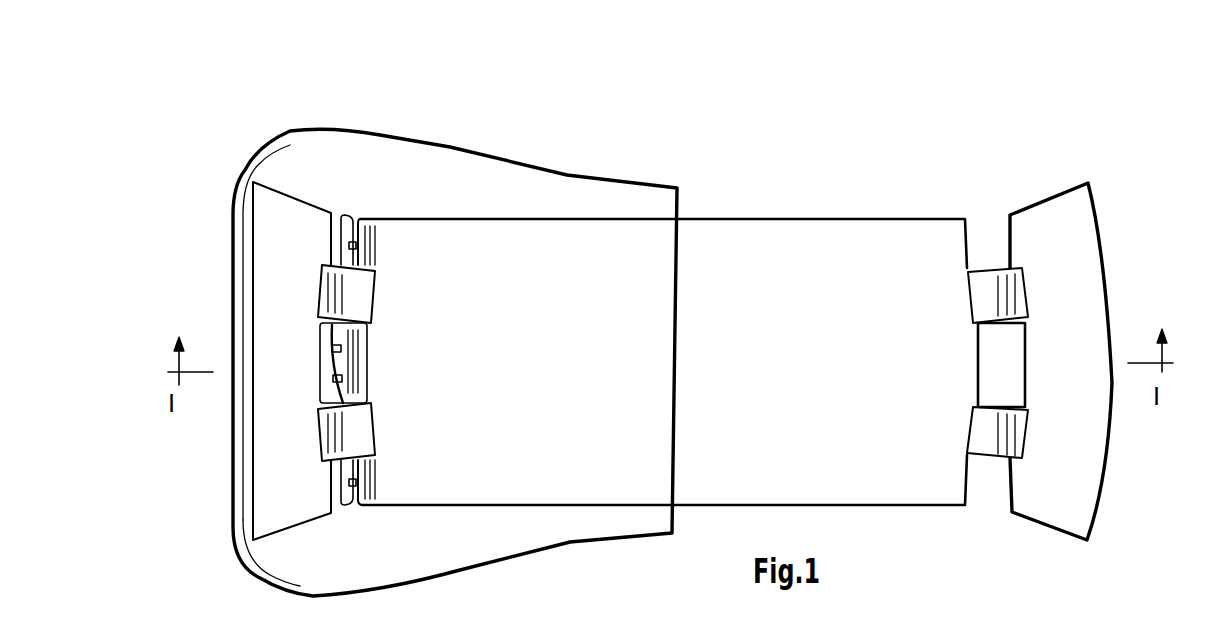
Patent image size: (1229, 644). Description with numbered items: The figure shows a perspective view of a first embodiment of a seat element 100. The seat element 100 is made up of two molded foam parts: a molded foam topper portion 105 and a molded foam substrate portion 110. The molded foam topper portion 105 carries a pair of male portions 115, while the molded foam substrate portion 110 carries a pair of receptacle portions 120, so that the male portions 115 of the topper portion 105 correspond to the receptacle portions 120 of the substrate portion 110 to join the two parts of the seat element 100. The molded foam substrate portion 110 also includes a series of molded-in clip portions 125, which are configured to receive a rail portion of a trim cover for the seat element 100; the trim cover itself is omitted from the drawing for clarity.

The seat element 100 is at (815, 118).
The molded foam topper portion 105 is at (1100, 177).
The molded foam substrate portion 110 is at (678, 118).
The male portions 115 is at (1012, 293).
The receptacle portions 120 is at (337, 295).
The molded-in clip portions 125 is at (350, 245).